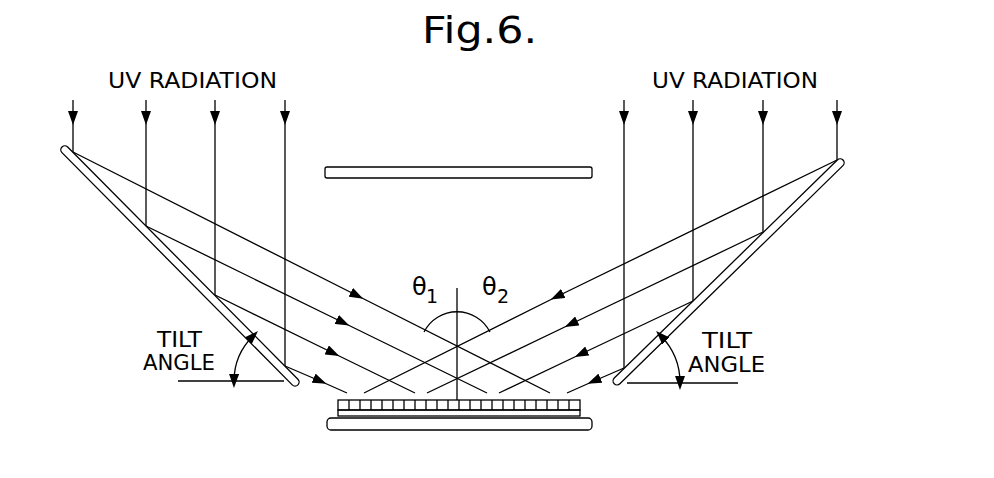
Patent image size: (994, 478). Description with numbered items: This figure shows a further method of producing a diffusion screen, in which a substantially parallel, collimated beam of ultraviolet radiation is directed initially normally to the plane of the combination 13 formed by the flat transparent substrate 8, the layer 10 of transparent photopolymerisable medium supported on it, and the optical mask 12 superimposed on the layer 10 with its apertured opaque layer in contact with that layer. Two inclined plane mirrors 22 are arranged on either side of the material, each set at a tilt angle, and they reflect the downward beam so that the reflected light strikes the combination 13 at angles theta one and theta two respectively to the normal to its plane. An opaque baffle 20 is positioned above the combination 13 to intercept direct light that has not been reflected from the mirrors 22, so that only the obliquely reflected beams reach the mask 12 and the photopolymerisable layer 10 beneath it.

The substrate 8 is at (590, 429).
The layer of transparent photopolymerisable medium 10 is at (581, 412).
The optical mask 12 is at (581, 403).
The combination 13 is at (474, 423).
The baffle 20 is at (421, 167).
The mirrors 22 is at (188, 281).